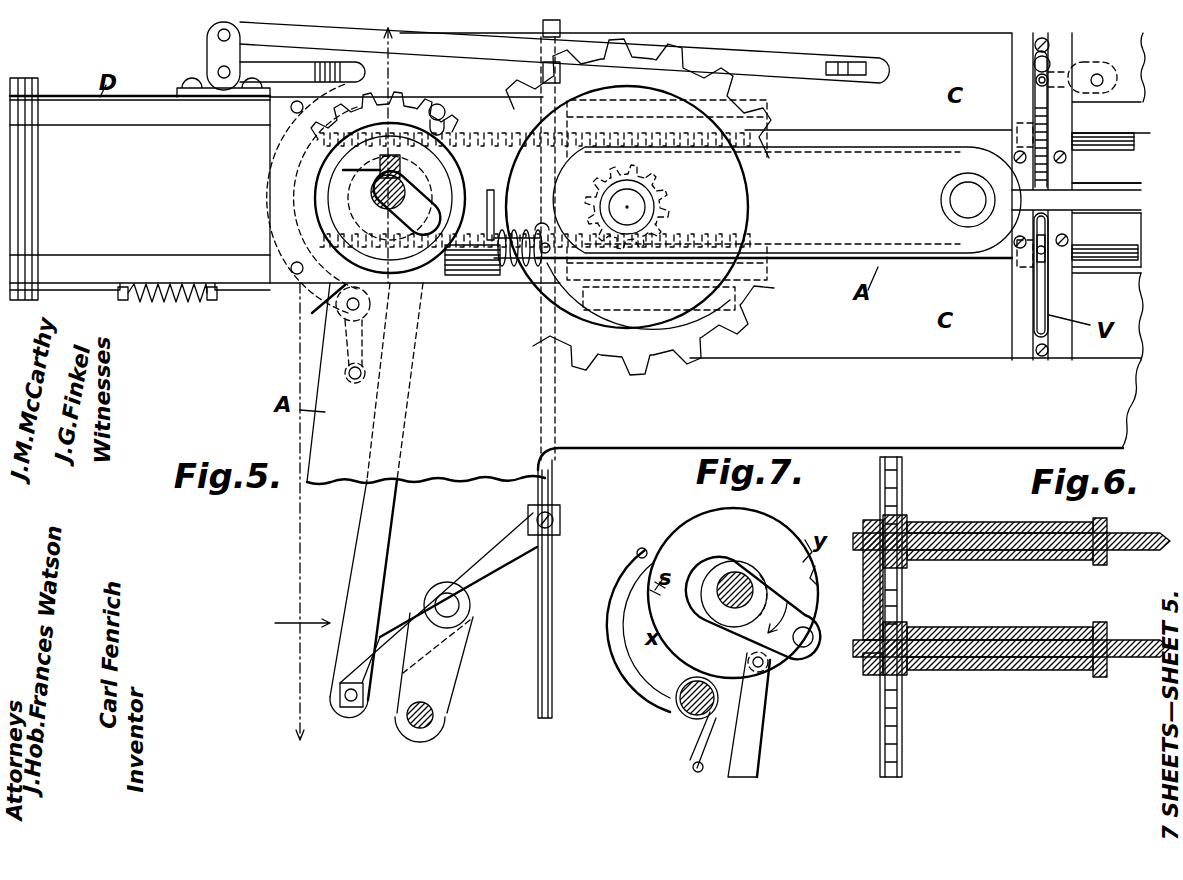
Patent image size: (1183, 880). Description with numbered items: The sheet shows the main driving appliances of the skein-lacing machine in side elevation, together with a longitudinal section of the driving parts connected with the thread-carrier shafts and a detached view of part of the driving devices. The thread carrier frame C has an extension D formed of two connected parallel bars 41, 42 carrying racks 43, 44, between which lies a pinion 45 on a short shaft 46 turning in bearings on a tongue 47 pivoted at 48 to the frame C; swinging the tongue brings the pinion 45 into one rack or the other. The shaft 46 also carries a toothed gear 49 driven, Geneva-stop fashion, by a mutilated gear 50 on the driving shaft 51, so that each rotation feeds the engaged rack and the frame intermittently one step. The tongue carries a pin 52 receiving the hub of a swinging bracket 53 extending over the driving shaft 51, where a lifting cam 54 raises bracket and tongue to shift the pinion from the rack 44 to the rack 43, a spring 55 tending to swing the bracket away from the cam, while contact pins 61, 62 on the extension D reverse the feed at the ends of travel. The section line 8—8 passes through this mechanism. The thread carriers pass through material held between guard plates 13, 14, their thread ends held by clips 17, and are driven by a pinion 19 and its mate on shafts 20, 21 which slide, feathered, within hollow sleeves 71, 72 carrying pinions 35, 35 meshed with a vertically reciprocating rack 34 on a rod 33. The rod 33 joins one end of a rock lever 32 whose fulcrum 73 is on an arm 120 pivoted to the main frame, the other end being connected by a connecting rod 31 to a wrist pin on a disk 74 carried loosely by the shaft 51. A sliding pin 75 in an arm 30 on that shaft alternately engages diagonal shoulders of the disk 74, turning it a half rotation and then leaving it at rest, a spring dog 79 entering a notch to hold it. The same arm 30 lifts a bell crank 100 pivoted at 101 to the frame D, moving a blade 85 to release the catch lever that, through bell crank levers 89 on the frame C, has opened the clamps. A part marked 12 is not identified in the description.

In FIG. 5, the section line 8— 8 is at (342, 395).
In FIG. 5, the frame block 12 is at (1114, 96).
In FIG. 5, the guard plate 13 is at (1141, 213).
In FIG. 5, the guard plate 14 is at (1141, 183).
In FIG. 5, the clip 17 is at (1047, 252).
In FIG. 5, the pinion 19 is at (1048, 115).
In FIG. 5, the shaft 20 is at (1112, 150).
In FIG. 6, the shaft 20 is at (1128, 535).
In FIG. 5, the shaft 21 is at (1112, 252).
In FIG. 6, the shaft 21 is at (1128, 642).
In FIG. 5, the arm 30 is at (500, 212).
In FIG. 7, the arm 30 is at (748, 632).
In FIG. 5, the connecting rod 31 is at (362, 546).
In FIG. 7, the connecting rod 31 is at (768, 737).
In FIG. 5, the rock lever 32 is at (490, 548).
In FIG. 5, the rack rod 33 is at (538, 658).
In FIG. 6, the rack rod 33 is at (902, 763).
In FIG. 5, the rack 34 is at (560, 30).
In FIG. 6, the rack 34 is at (903, 590).
In FIG. 6, the pinion 35 is at (903, 520).
In FIG. 5, the bar 41 is at (137, 120).
In FIG. 5, the bar 42 is at (112, 262).
In FIG. 5, the rack 43 is at (650, 138).
In FIG. 5, the rack 44 is at (646, 240).
In FIG. 5, the pinion 45 is at (658, 208).
In FIG. 5, the short shaft 46 is at (636, 204).
In FIG. 5, the tongue 47 is at (787, 200).
In FIG. 5, the pivot 48 is at (950, 199).
In FIG. 5, the toothed gear 49 is at (595, 362).
In FIG. 5, the mutilated gear 50 is at (440, 108).
In FIG. 5, the driving shaft 51 is at (372, 188).
In FIG. 7, the driving shaft 51 is at (733, 572).
In FIG. 5, the pin 52 is at (486, 282).
In FIG. 5, the swinging bracket 53 is at (384, 135).
In FIG. 5, the lifting cam 54 is at (407, 202).
In FIG. 5, the spring 55 is at (507, 300).
In FIG. 5, the contact pin 61 is at (118, 293).
In FIG. 5, the contact pin 62 is at (620, 300).
In FIG. 6, the hollow shaft 71 is at (990, 522).
In FIG. 6, the hollow shaft 72 is at (1015, 668).
In FIG. 5, the fulcrum 73 is at (447, 605).
In FIG. 5, the disk 74 is at (300, 222).
In FIG. 7, the disk 74 is at (688, 528).
In FIG. 7, the sliding pin 75 is at (805, 645).
In FIG. 5, the spring dog 79 is at (268, 218).
In FIG. 7, the spring dog 79 is at (657, 693).
In FIG. 5, the blade 85 is at (466, 48).
In FIG. 5, the bell crank lever 89 is at (1035, 80).
In FIG. 5, the bell crank 100 is at (372, 72).
In FIG. 5, the pivot 101 is at (216, 59).
In FIG. 5, the arm 120 is at (448, 712).